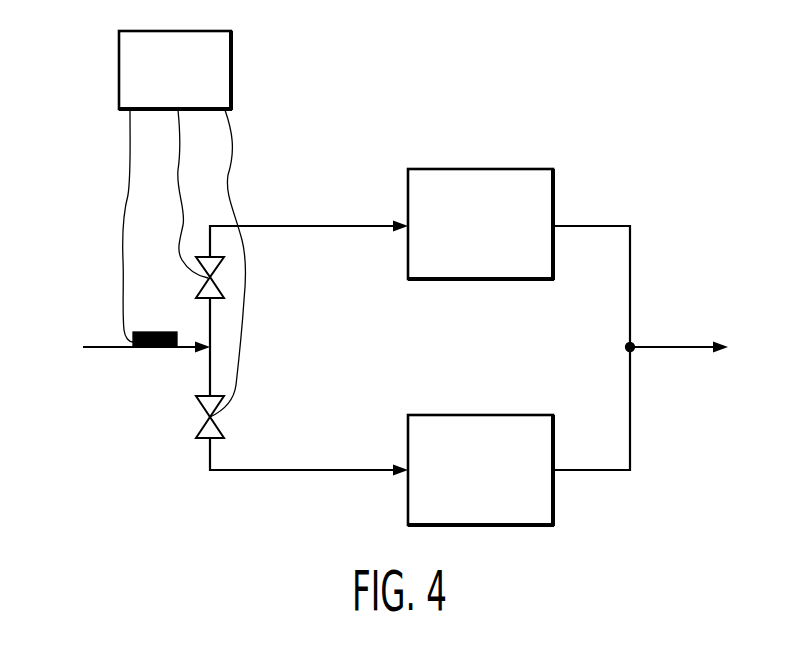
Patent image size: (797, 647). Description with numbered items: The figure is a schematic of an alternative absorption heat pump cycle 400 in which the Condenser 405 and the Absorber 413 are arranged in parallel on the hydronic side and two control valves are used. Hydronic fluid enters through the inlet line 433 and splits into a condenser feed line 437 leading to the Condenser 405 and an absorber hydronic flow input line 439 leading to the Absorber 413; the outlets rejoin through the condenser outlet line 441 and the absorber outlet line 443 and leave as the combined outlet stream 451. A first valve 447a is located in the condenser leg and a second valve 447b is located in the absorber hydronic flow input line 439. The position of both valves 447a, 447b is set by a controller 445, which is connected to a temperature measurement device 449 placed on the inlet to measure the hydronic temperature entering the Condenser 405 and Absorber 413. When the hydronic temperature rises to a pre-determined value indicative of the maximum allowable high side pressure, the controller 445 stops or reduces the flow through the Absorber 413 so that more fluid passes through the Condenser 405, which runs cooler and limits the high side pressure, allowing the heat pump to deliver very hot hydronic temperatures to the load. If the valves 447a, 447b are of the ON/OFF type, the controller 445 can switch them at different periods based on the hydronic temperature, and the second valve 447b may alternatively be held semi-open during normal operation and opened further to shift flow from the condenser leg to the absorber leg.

The heat pump cycle 400 is at (657, 91).
The Condenser 405 is at (528, 168).
The Absorber 413 is at (408, 500).
The inlet stream line 433 is at (97, 348).
The condenser feed line 437 is at (309, 225).
The absorber hydronic flow input line 439 is at (234, 472).
The condenser outlet line 441 is at (600, 226).
The absorber outlet line 443 is at (632, 448).
The controller 445 is at (119, 77).
The valve 447a is at (198, 288).
The second valve 447b is at (204, 422).
The temperature measurement device 449 is at (153, 332).
The outlet stream 451 is at (685, 346).